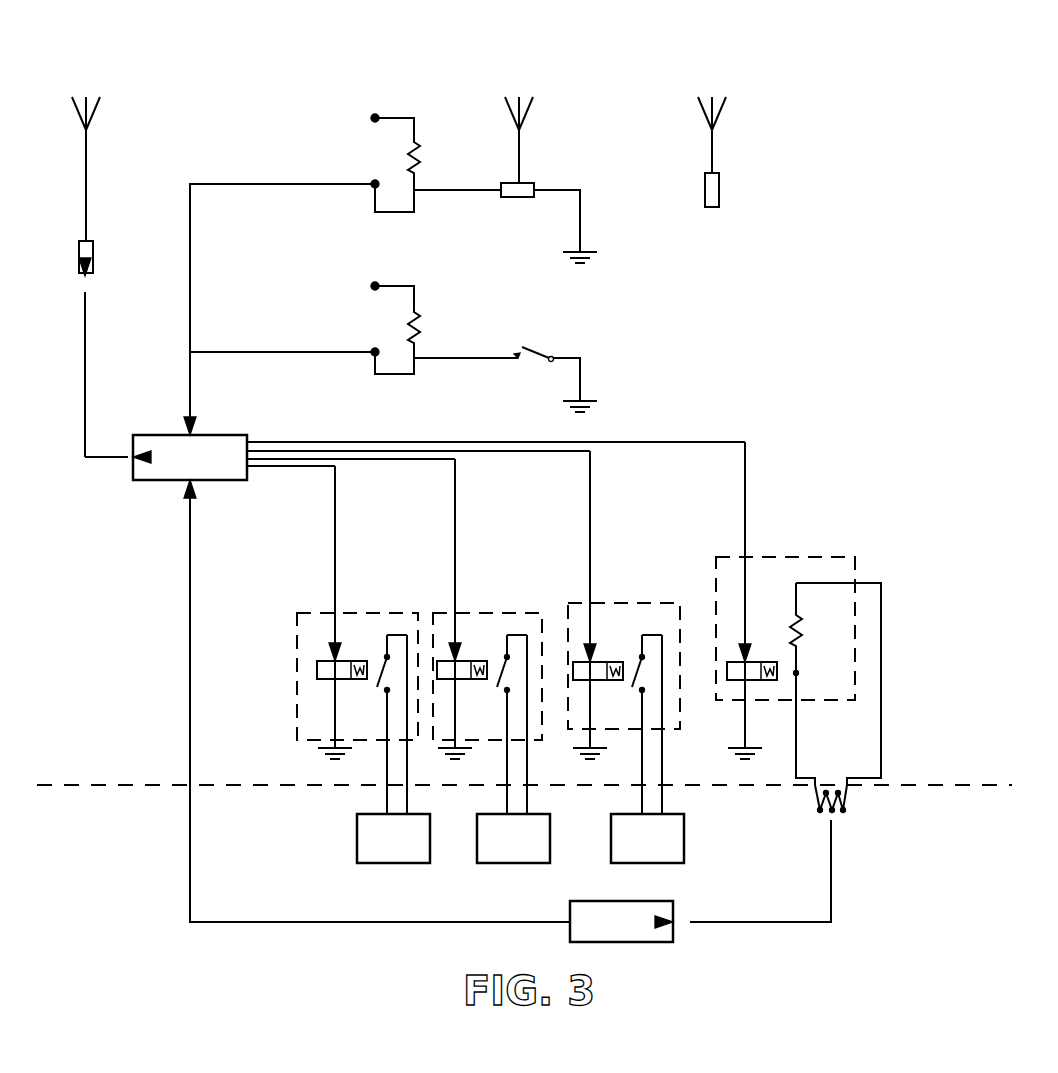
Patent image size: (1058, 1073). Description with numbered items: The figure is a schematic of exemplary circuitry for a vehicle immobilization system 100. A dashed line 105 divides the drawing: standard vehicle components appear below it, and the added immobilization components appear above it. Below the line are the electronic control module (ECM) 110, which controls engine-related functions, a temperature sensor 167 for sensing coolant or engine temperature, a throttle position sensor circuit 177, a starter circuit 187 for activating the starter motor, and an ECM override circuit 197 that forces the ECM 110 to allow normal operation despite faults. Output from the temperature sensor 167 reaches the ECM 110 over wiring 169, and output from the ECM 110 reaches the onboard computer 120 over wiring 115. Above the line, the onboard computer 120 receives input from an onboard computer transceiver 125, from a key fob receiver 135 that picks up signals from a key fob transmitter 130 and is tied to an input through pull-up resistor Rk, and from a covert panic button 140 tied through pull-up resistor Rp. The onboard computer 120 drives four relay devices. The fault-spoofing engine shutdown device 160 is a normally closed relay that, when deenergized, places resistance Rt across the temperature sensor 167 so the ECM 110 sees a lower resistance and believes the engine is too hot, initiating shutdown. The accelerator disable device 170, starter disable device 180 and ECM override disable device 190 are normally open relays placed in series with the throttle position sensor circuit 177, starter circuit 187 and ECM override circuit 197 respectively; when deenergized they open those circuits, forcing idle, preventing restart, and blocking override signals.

The vehicle immobilization system 100 is at (798, 40).
The dashed line 105 is at (524, 804).
The electronic control module (ECM) 110 is at (621, 921).
The wiring 115 is at (377, 701).
The onboard computer 120 is at (190, 457).
The onboard computer transceiver 125 is at (111, 280).
The key fob transmitter 130 is at (716, 172).
The key fob receiver 135 is at (393, 180).
The panic button 140 is at (393, 347).
The fault-spoofing engine shutdown device 160 is at (765, 540).
The temperature sensor 167 is at (855, 802).
The wiring 169 is at (743, 874).
The accelerator disable device 170 is at (618, 592).
The throttle position sensor circuit 177 is at (647, 838).
The starter disable device 180 is at (470, 600).
The starter circuit 187 is at (513, 838).
The ECM override disable device 190 is at (352, 600).
The ECM override circuit 197 is at (393, 838).